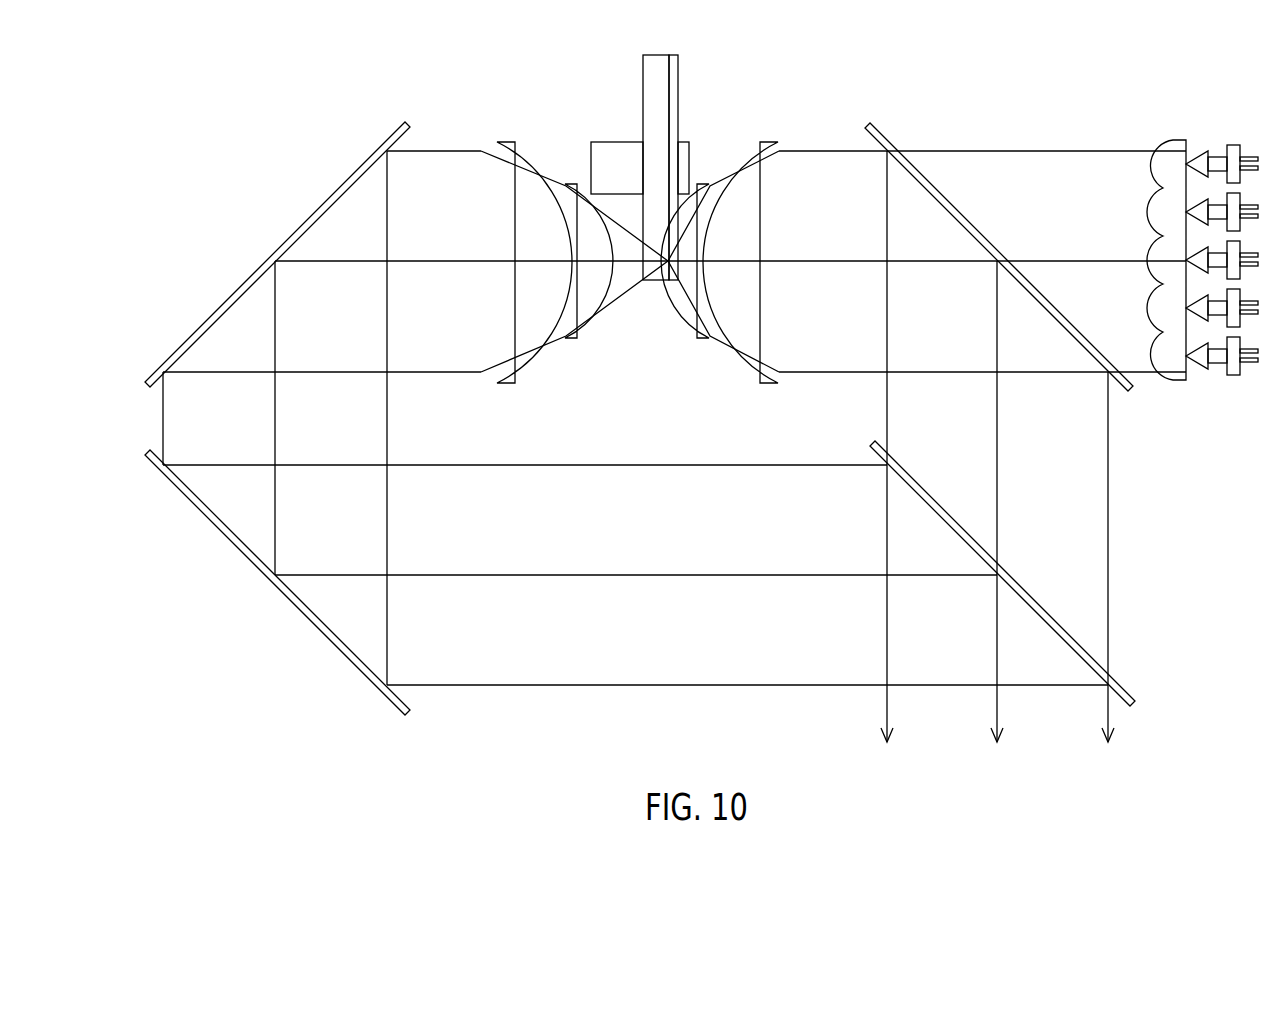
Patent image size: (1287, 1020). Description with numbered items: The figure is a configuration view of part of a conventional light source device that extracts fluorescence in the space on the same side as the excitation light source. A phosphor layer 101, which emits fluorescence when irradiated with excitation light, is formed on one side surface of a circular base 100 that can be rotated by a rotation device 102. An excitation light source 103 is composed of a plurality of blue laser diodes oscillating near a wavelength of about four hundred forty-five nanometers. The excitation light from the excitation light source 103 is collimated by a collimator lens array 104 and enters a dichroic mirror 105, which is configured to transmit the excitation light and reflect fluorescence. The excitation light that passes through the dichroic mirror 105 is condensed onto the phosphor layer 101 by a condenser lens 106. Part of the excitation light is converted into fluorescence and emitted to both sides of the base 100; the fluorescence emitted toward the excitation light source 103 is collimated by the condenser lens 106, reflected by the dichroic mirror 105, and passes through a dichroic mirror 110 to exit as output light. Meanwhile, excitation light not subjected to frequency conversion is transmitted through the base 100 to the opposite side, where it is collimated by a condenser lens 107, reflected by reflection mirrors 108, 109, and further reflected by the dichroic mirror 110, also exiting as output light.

The base 100 is at (653, 280).
The phosphor layer 101 is at (675, 281).
The rotation device 102 is at (613, 141).
The excitation light source 103 is at (1233, 144).
The collimator lens array 104 is at (1173, 140).
The dichroic mirror 105 is at (883, 126).
The condenser lens 106 is at (768, 142).
The condenser lens 107 is at (507, 142).
The reflection mirror 108 is at (397, 128).
The reflection mirror 109 is at (388, 707).
The dichroic mirror 110 is at (1127, 683).